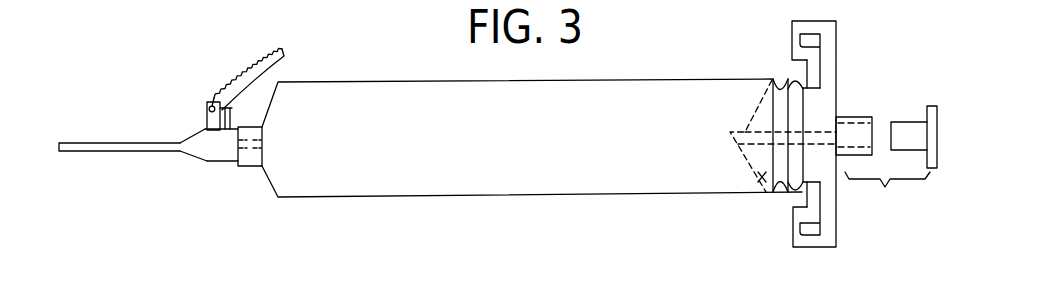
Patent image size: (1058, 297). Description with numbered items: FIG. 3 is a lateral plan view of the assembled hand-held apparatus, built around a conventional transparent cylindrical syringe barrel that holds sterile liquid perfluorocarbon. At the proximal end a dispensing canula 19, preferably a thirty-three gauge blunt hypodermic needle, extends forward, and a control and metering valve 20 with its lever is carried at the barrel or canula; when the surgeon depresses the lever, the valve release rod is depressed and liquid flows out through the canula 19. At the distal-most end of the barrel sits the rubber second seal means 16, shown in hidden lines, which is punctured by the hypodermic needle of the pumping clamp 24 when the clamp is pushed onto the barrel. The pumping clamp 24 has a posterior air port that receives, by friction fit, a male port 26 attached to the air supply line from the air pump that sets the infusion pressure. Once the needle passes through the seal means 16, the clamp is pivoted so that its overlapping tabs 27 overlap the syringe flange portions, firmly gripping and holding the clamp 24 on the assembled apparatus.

The second seal means 16 is at (757, 192).
The dispensing canula 19 is at (108, 153).
The control and metering valve 20 is at (240, 78).
The pumping clamp 24 is at (844, 201).
The male port 26 is at (905, 120).
The overlapping tabs 27 is at (816, 248).